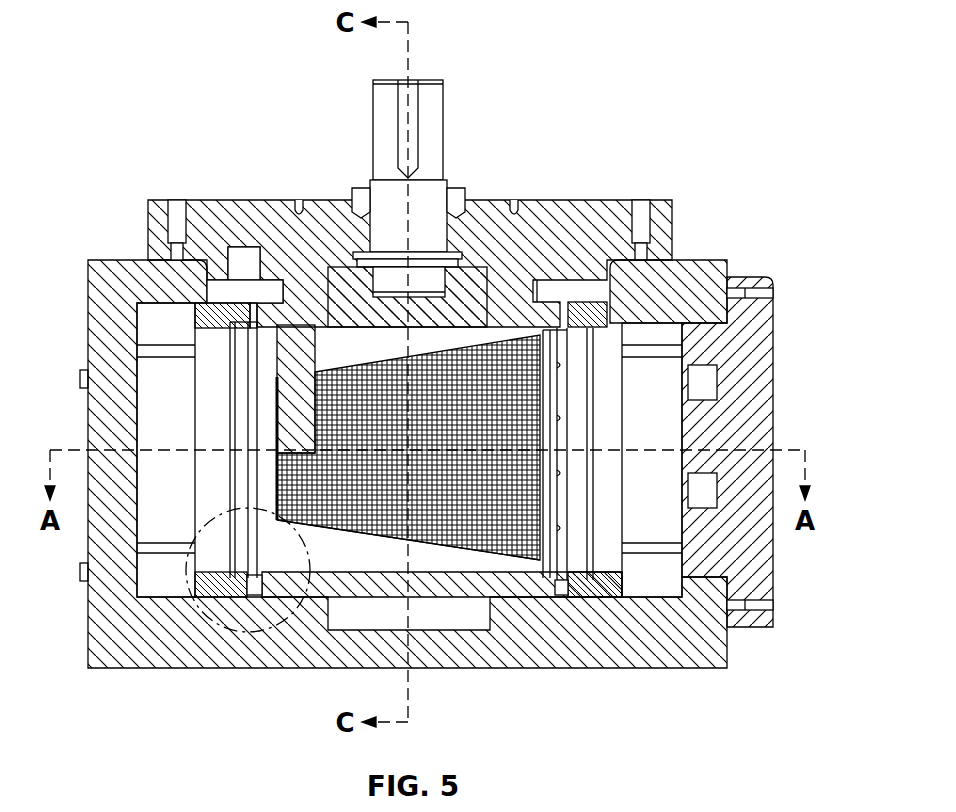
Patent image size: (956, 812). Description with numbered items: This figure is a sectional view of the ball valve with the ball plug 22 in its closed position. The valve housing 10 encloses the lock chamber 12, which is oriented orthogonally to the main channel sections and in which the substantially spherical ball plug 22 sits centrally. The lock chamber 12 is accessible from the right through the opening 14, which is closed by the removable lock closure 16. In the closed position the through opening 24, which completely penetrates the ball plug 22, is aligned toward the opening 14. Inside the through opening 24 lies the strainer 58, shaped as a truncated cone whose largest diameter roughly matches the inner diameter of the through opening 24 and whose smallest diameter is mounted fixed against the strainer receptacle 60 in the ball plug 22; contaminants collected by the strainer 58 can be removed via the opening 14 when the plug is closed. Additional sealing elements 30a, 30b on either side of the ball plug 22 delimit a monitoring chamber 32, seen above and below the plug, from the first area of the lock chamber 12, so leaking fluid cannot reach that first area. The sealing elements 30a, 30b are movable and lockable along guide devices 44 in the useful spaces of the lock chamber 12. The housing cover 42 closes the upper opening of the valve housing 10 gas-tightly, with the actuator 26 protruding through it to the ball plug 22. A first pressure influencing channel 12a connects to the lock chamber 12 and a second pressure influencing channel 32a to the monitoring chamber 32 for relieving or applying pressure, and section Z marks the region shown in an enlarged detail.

The valve housing 10 is at (108, 354).
The lock chamber 12 is at (652, 437).
The first pressure influencing channel 12a is at (717, 500).
The opening 14 is at (718, 374).
The lock closure 16 is at (763, 314).
The ball plug 22 is at (492, 312).
The through opening 24 is at (428, 560).
The actuator 26 is at (385, 192).
The additional sealing element 30a is at (597, 545).
The additional sealing element 30b is at (243, 553).
The monitoring chamber 32 is at (218, 287).
The second pressure influencing channel 32a is at (243, 280).
The housing cover 42 is at (268, 225).
The guide device 44 is at (143, 550).
The strainer 58 is at (352, 520).
The strainer receptacle 60 is at (293, 348).
The section Z is at (190, 570).